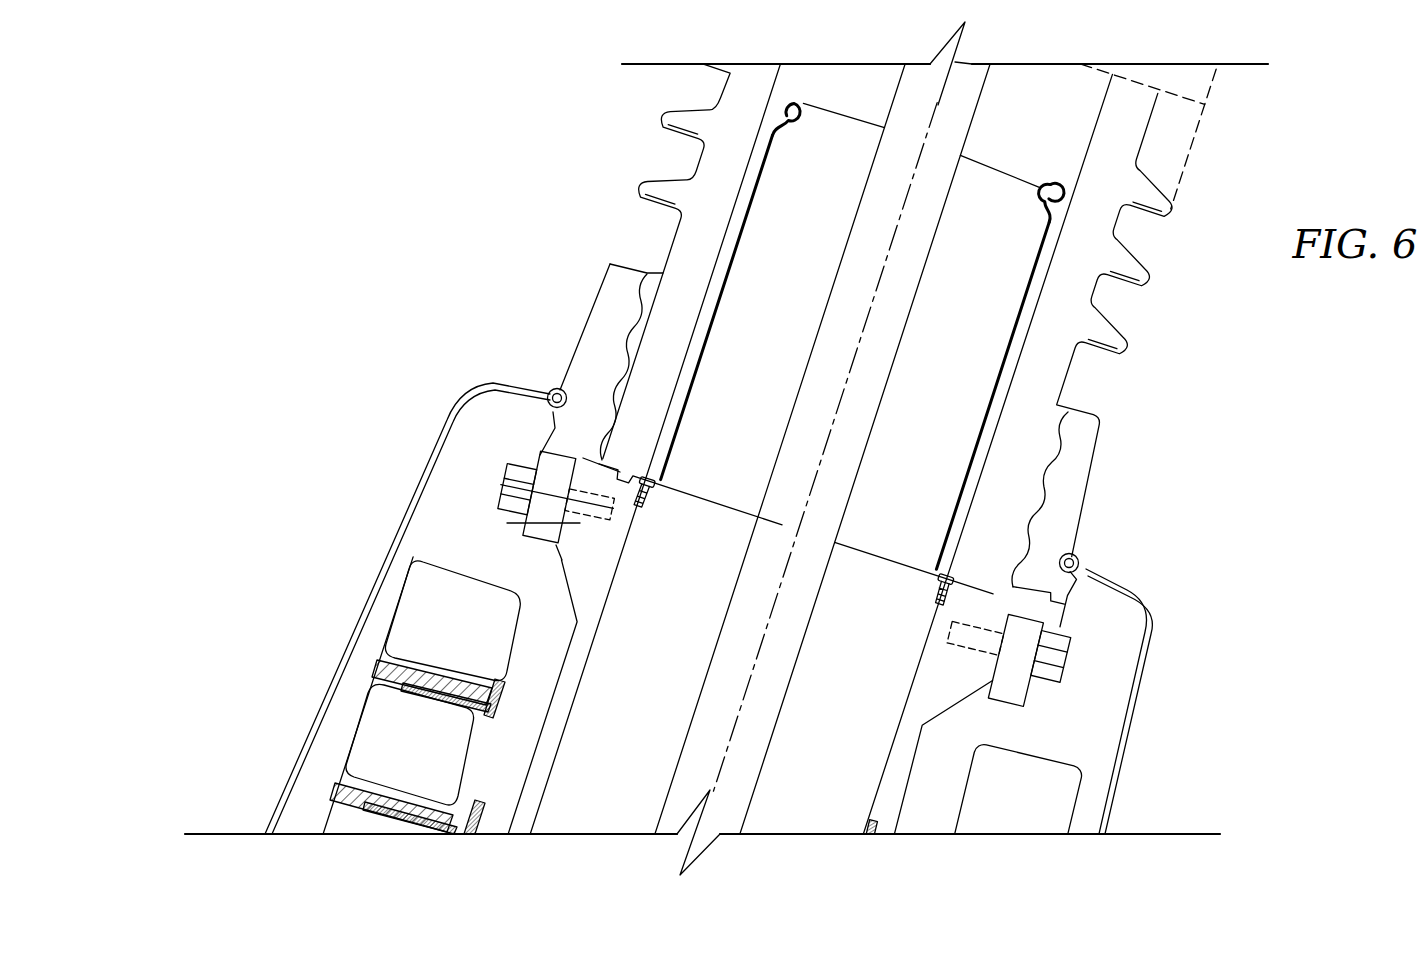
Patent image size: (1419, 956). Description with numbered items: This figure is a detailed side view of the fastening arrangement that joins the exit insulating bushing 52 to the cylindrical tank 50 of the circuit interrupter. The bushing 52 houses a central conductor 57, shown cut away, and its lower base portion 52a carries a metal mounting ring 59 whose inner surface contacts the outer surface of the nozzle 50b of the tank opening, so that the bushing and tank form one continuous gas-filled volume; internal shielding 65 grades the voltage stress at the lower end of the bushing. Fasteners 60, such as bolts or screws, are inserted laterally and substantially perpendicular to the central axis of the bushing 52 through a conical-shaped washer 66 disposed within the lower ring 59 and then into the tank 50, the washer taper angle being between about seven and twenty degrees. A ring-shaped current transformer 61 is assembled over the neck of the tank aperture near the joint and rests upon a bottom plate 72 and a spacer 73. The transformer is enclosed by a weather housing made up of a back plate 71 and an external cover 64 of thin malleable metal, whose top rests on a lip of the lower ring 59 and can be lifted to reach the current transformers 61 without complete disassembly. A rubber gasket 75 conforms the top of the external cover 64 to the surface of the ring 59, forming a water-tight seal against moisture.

The tank 50 is at (562, 752).
The nozzle 50b is at (852, 603).
The exit insulating bushing 52 is at (1173, 210).
The extrusion flange 52a is at (882, 493).
The central conductor 57 is at (910, 256).
The mounting ring 59 is at (1082, 450).
The fastener 60 is at (507, 494).
The current transformer 61 is at (702, 721).
The external cover 64 is at (435, 452).
The internal shielding 65 is at (995, 163).
The conical-shaped washer 66 is at (550, 490).
The back plate 71 is at (540, 605).
The bottom plate 72 is at (505, 692).
The spacer 73 is at (380, 662).
The rubber gasket 75 is at (553, 388).